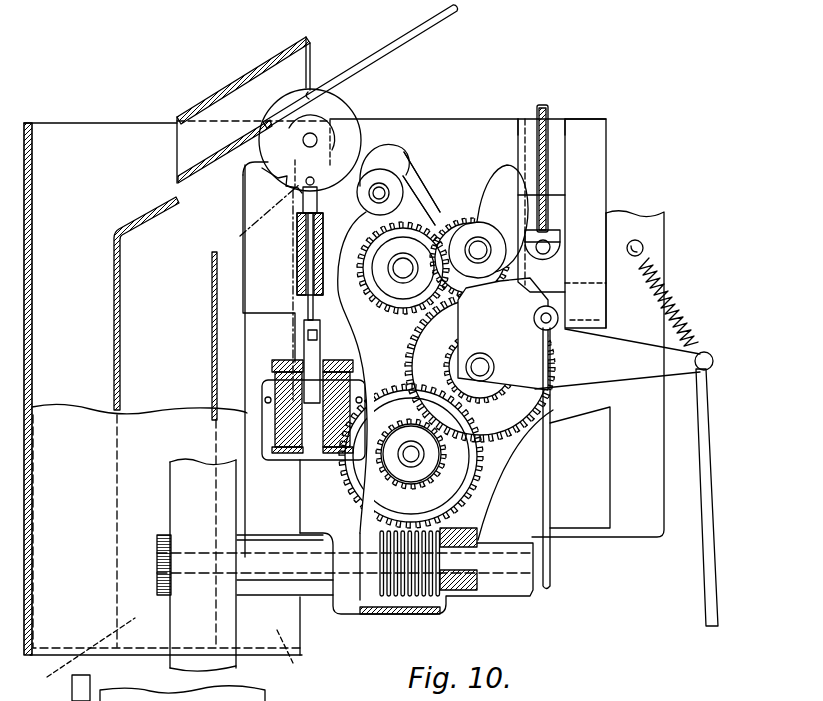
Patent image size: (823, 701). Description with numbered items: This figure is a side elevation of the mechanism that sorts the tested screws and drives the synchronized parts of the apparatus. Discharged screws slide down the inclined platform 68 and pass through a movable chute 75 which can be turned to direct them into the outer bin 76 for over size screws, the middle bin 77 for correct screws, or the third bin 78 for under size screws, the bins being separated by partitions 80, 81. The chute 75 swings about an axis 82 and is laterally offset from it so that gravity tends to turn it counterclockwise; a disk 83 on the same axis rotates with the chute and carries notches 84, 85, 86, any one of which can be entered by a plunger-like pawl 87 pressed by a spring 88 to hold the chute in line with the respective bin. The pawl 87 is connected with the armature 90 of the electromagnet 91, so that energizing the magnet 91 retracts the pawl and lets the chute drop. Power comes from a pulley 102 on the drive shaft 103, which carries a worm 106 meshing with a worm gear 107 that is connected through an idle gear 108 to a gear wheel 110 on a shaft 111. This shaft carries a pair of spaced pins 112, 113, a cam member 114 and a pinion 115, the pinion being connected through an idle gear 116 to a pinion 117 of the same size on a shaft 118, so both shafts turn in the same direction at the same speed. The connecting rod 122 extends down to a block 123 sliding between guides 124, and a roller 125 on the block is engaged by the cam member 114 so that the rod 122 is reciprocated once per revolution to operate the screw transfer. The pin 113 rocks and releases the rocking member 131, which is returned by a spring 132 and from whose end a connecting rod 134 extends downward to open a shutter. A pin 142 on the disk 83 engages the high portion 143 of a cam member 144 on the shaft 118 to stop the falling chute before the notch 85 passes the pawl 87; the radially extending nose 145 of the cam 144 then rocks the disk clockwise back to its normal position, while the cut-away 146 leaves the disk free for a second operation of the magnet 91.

The inclined platform 68 is at (405, 40).
The movable chute 75 is at (224, 160).
The outer bin 76 is at (80, 143).
The middle bin 77 is at (79, 657).
The third bin 78 is at (343, 612).
The partition 80 is at (113, 353).
The partition 81 is at (212, 365).
The axis 82 is at (311, 133).
The disk 83 is at (347, 110).
The notch 84 is at (303, 203).
The notch 85 is at (290, 190).
The notch 86 is at (263, 166).
The pawl 87 is at (303, 250).
The spring 88 is at (297, 276).
The armature 90 is at (313, 352).
The magnet 91 is at (331, 462).
The pulley 102 is at (185, 470).
The drive shaft 103 is at (460, 590).
The worm 106 is at (393, 600).
The worm gear 107 is at (463, 487).
The idle gear 108 is at (549, 428).
The gear wheel 110 is at (478, 222).
The shaft 111 is at (477, 233).
The pin 112 is at (443, 323).
The pin 113 is at (467, 253).
The cam member 114 is at (506, 172).
The pinion 115 is at (508, 334).
The idle gear 116 is at (406, 300).
The pinion 117 is at (404, 196).
The shaft 118 is at (405, 128).
The connecting rod 122 is at (546, 115).
The block 123 is at (561, 212).
The guides 124 is at (520, 130).
The roller 125 is at (562, 253).
The rocking member 131 is at (635, 364).
The spring 132 is at (692, 318).
The connecting rod 134 is at (716, 543).
The pin 142 is at (251, 292).
The portion 143 is at (380, 175).
The cam member 144 is at (405, 158).
The nose 145 is at (339, 280).
The cut-away 146 is at (408, 170).